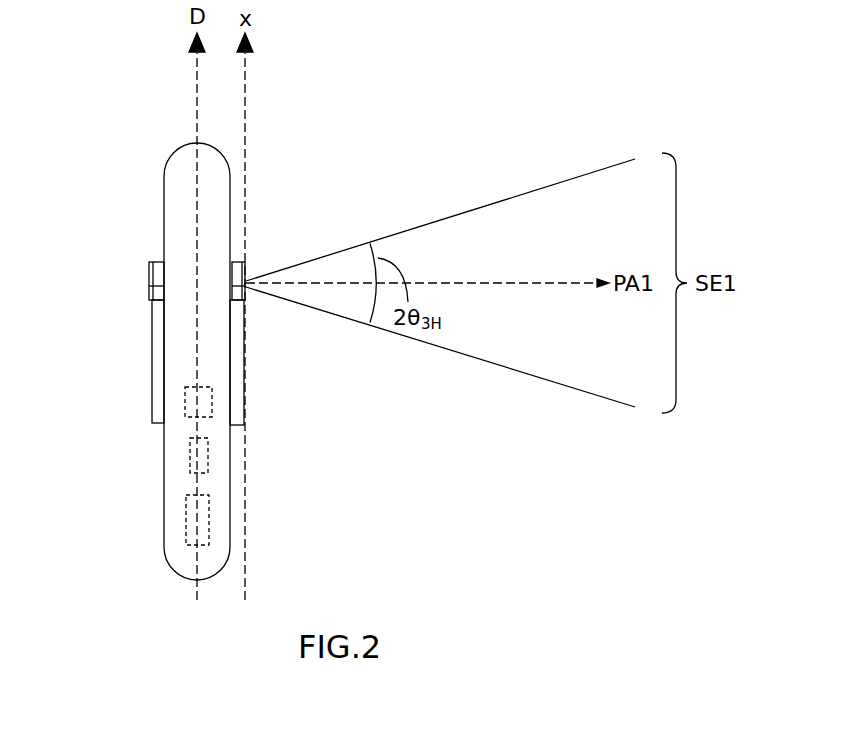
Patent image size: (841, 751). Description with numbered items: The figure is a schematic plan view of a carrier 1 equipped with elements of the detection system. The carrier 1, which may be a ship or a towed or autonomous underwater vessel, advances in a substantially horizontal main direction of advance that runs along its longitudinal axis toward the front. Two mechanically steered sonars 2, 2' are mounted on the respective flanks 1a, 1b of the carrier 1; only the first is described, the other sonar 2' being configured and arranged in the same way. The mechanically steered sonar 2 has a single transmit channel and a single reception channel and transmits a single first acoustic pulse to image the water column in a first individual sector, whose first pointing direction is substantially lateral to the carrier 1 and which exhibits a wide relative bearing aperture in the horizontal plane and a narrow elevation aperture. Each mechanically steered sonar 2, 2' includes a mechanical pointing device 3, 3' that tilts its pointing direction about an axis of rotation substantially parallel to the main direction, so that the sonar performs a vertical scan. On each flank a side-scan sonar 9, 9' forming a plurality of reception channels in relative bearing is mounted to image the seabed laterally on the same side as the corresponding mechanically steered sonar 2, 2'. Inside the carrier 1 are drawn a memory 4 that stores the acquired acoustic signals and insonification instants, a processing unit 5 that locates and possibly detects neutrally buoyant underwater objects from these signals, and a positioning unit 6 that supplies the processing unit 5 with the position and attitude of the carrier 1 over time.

The carrier 1 is at (180, 326).
The flank of the carrier 1a is at (220, 152).
The flank of the carrier 1b is at (174, 152).
The mechanically steered sonar 2 is at (261, 238).
The mechanically steered sonar 2' is at (121, 257).
The mechanical pointing device 3 is at (268, 325).
The mechanical pointing device 3' is at (123, 315).
The memory 4 is at (185, 403).
The processing unit 5 is at (204, 515).
The positioning unit 6 is at (200, 456).
The side-scan sonar 9 is at (271, 368).
The side-scan sonar 9' is at (126, 361).